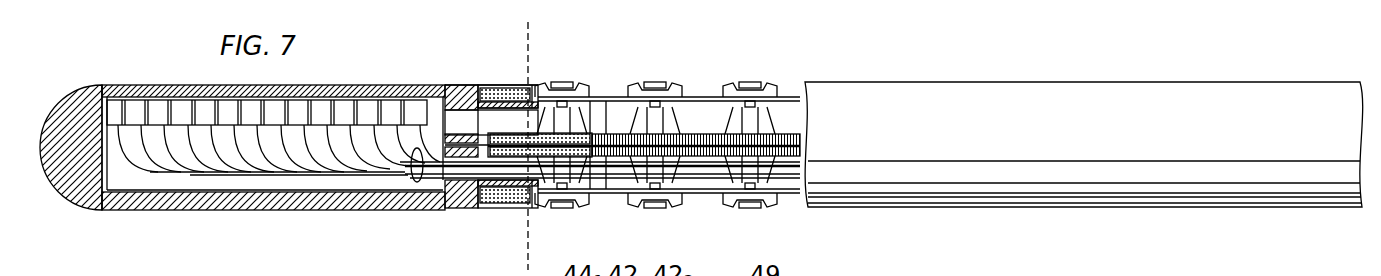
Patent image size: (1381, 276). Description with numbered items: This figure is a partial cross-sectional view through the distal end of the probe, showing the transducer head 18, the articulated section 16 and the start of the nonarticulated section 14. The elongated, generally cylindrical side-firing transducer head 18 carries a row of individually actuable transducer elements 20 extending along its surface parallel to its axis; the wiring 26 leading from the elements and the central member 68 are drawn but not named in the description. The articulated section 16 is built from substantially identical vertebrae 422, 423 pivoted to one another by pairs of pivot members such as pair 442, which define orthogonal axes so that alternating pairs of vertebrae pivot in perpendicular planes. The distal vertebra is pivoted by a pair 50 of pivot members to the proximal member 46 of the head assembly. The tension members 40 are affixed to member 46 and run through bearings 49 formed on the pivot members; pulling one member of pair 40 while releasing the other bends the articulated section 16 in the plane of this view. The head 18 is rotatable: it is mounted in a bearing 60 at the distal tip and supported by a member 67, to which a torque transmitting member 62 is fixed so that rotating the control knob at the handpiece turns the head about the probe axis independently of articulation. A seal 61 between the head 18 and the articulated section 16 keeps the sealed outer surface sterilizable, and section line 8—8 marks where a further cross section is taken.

The nonarticulated section 14 is at (1102, 71).
The articulated section 16 is at (778, 69).
The side-firing transducer head 18 is at (230, 230).
The transducer elements 20 is at (162, 100).
The signal wires 26 is at (412, 183).
The pair of tension members 40 is at (597, 94).
The vertebra 422 is at (640, 86).
The vertebra 423 is at (675, 96).
The pair of pivot members 442 is at (653, 90).
The proximal member 46 is at (510, 84).
The bearings 49 is at (696, 96).
The pair of pivot members 50 is at (555, 83).
The bearing 60 is at (507, 208).
The seal 61 is at (480, 85).
The torque transmitting member 62 is at (452, 200).
The support member 67 is at (498, 117).
The central shaft 68 is at (702, 162).
The section line 8- 8 is at (528, 22).